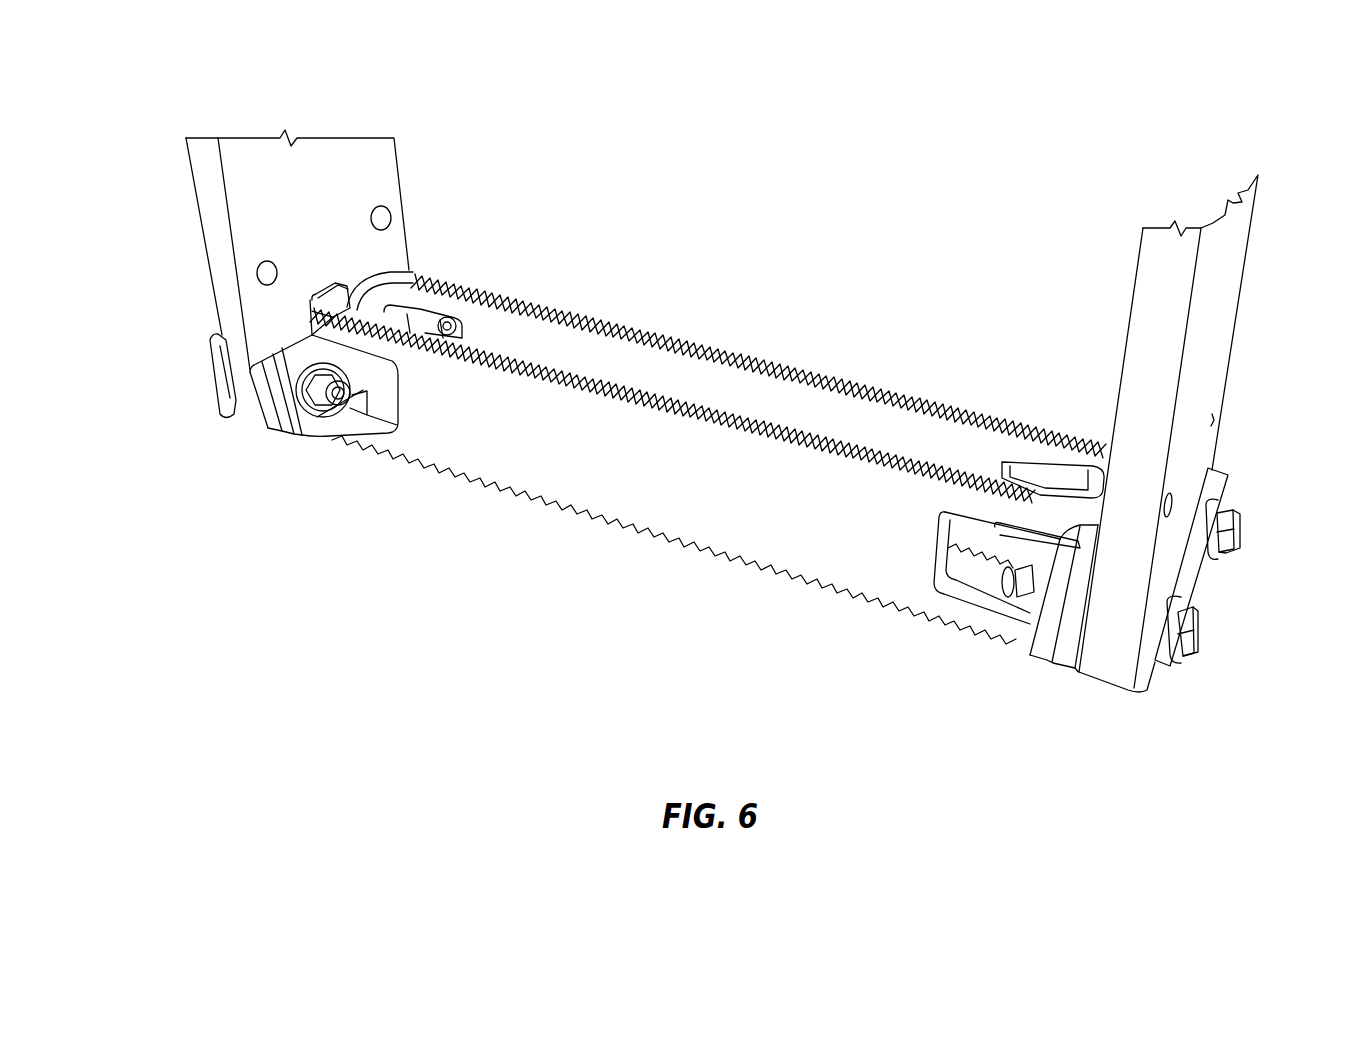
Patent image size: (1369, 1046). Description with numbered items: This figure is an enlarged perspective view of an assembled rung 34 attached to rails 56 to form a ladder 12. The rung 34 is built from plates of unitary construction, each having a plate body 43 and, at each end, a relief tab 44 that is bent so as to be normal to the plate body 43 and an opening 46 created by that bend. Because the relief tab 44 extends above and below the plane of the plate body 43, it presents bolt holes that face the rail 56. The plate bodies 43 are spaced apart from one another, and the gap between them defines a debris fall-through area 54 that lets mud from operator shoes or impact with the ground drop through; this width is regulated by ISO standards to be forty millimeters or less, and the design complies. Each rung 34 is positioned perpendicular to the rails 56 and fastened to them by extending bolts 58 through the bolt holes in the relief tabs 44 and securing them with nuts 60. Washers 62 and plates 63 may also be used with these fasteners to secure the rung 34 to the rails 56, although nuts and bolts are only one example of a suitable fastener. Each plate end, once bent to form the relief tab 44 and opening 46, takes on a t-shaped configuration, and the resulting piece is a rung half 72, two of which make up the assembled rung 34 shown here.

The ladder 12 is at (980, 181).
The rung 34 is at (791, 210).
The plate body 43 is at (580, 340).
The relief tab 44 is at (268, 430).
The opening 46 is at (1040, 460).
The debris fall-through area 54 is at (812, 398).
The rail 56 is at (190, 138).
The bolt 58 is at (447, 322).
The nut 60 is at (308, 387).
The washer 62 is at (1215, 553).
The plate 63 is at (210, 345).
The rung half 72 is at (678, 323).